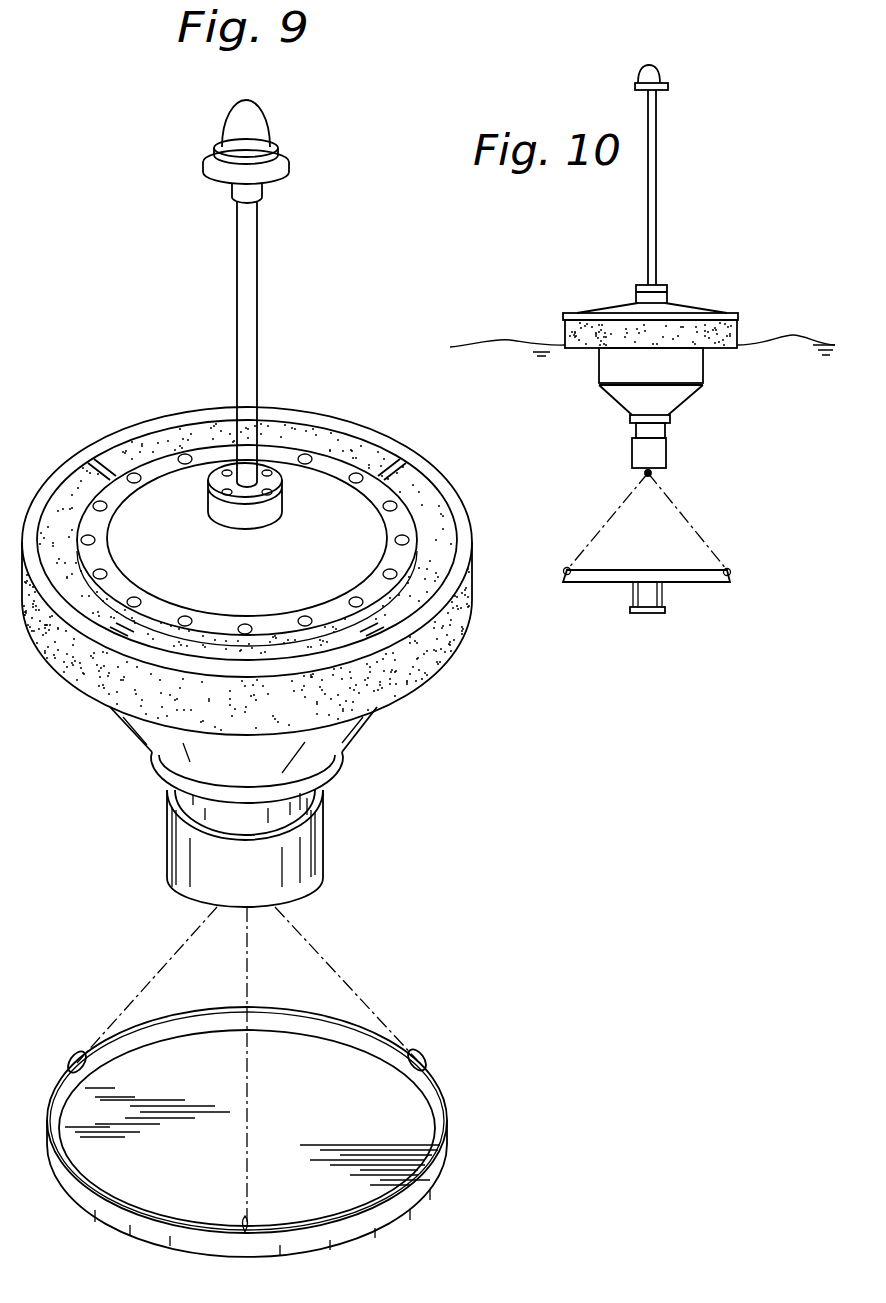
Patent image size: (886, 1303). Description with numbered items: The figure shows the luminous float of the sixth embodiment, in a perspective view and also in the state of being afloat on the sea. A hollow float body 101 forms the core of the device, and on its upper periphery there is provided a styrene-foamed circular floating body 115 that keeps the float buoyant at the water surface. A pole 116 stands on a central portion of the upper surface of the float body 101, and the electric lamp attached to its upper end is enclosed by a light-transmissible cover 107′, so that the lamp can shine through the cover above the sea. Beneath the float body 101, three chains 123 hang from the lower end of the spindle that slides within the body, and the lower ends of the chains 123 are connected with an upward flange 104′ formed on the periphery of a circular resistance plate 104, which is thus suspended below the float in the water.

In FIG. 9, the light-transmissible cover 107′ is at (238, 113).
In FIG. 10, the light-transmissible cover 107′ is at (657, 72).
In FIG. 9, the pole 116 is at (252, 302).
In FIG. 10, the pole 116 is at (657, 180).
In FIG. 9, the styrene-foamed circular floating body 115 is at (432, 502).
In FIG. 10, the styrene-foamed circular floating body 115 is at (708, 320).
In FIG. 9, the hollow float body 101 is at (348, 745).
In FIG. 10, the hollow float body 101 is at (678, 395).
In FIG. 9, the chains 123 is at (243, 968).
In FIG. 10, the chains 123 is at (635, 493).
In FIG. 9, the upward flange 104′ is at (438, 1097).
In FIG. 10, the upward flange 104′ is at (703, 570).
In FIG. 9, the circular resistance plate 104 is at (423, 1180).
In FIG. 10, the circular resistance plate 104 is at (693, 585).